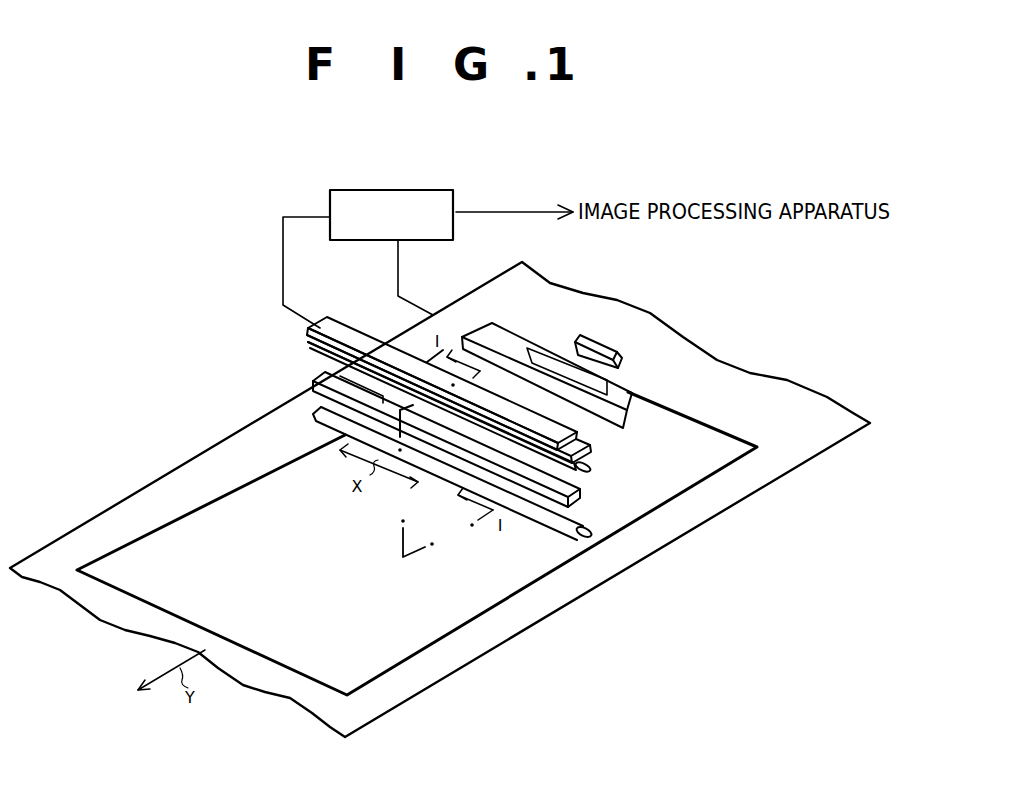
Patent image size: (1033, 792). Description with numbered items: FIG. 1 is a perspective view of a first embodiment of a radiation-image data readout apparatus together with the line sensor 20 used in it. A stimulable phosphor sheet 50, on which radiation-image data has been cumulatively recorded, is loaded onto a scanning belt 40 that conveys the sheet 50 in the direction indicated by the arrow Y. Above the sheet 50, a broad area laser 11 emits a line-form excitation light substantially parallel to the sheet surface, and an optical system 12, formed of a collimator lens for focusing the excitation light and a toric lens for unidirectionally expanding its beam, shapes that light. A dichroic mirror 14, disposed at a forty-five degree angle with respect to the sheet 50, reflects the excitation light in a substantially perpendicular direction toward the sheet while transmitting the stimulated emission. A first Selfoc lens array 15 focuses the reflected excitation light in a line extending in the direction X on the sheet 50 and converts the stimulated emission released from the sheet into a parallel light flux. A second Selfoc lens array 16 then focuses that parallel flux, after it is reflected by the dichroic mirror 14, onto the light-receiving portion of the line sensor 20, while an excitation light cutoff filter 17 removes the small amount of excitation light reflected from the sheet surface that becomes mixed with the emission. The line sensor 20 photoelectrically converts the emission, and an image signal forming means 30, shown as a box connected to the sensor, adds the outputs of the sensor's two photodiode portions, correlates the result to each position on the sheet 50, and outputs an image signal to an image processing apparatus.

The broad area laser 11 is at (577, 337).
The optical system 12 is at (637, 408).
The dichroic mirror 14 is at (315, 383).
The lens array 15 is at (318, 411).
The second Selfoc lens array 16 is at (591, 470).
The excitation light cutoff filter 17 is at (589, 450).
The line sensor 20 is at (338, 325).
The image signal forming means 30 is at (393, 189).
The scanning belt 40 is at (763, 388).
The stimulable phosphor sheet 50 is at (427, 633).